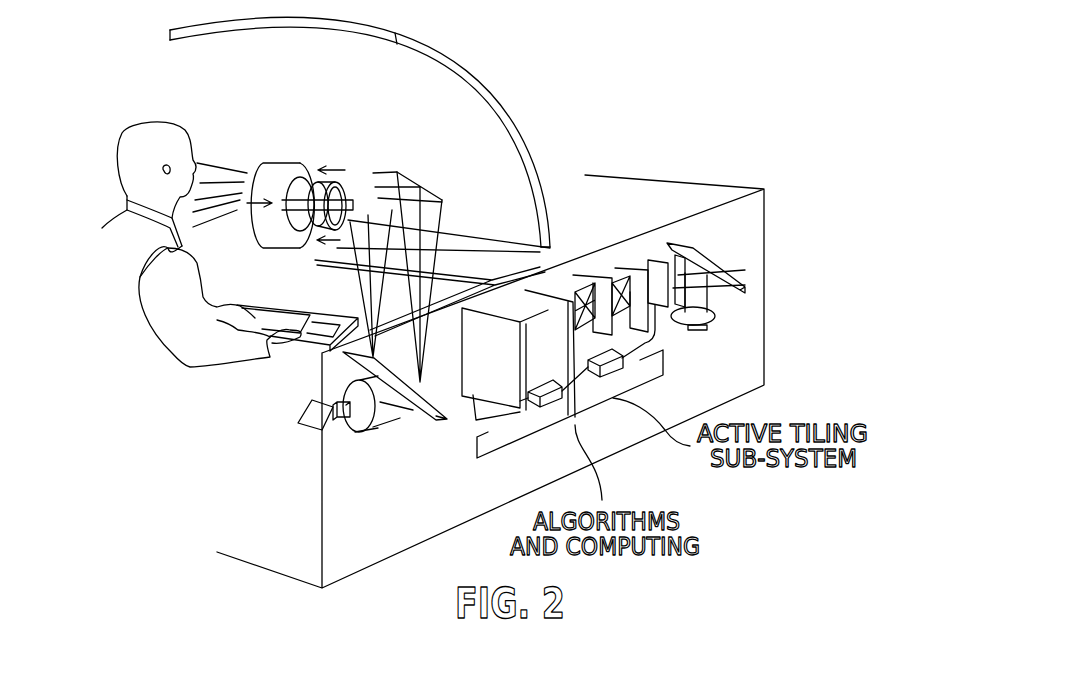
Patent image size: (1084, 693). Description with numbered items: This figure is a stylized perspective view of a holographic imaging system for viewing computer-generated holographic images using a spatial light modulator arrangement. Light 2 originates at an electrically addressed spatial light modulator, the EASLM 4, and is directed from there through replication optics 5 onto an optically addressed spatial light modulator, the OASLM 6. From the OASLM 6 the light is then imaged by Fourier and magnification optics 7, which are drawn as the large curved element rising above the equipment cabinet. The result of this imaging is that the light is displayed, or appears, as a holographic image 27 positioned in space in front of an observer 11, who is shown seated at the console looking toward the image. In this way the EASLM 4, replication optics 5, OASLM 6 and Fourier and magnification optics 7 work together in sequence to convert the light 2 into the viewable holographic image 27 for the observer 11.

The light 2 is at (722, 317).
The EASLM 4 is at (738, 266).
The replication optics 5 is at (636, 267).
The OASLM 6 is at (468, 418).
The Fourier and magnification optics 7 is at (490, 83).
The observer 11 is at (156, 125).
The holographic image 27 is at (272, 162).